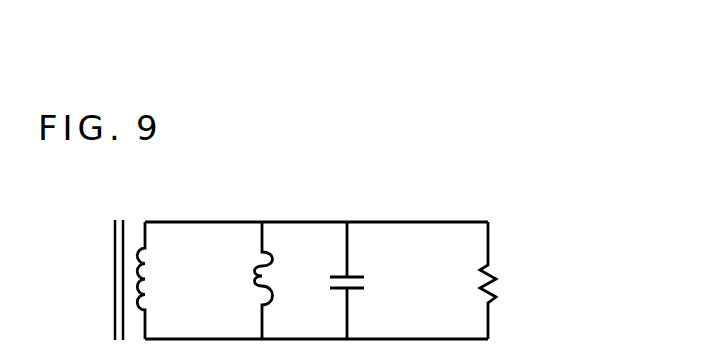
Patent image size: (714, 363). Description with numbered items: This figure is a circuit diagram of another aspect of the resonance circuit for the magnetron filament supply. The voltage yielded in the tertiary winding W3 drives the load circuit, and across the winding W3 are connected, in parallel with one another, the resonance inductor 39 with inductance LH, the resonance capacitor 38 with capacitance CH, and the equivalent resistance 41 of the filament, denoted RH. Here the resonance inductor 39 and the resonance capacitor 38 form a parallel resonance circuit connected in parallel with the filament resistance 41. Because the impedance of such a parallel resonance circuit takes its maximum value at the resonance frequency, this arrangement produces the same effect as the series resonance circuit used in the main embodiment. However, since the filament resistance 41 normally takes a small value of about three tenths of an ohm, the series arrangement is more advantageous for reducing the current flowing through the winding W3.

The tertiary winding W3 is at (142, 270).
The resonance inductor 39 is at (272, 267).
The resonance capacitor 38 is at (350, 277).
The equivalent resistance 41 is at (492, 267).